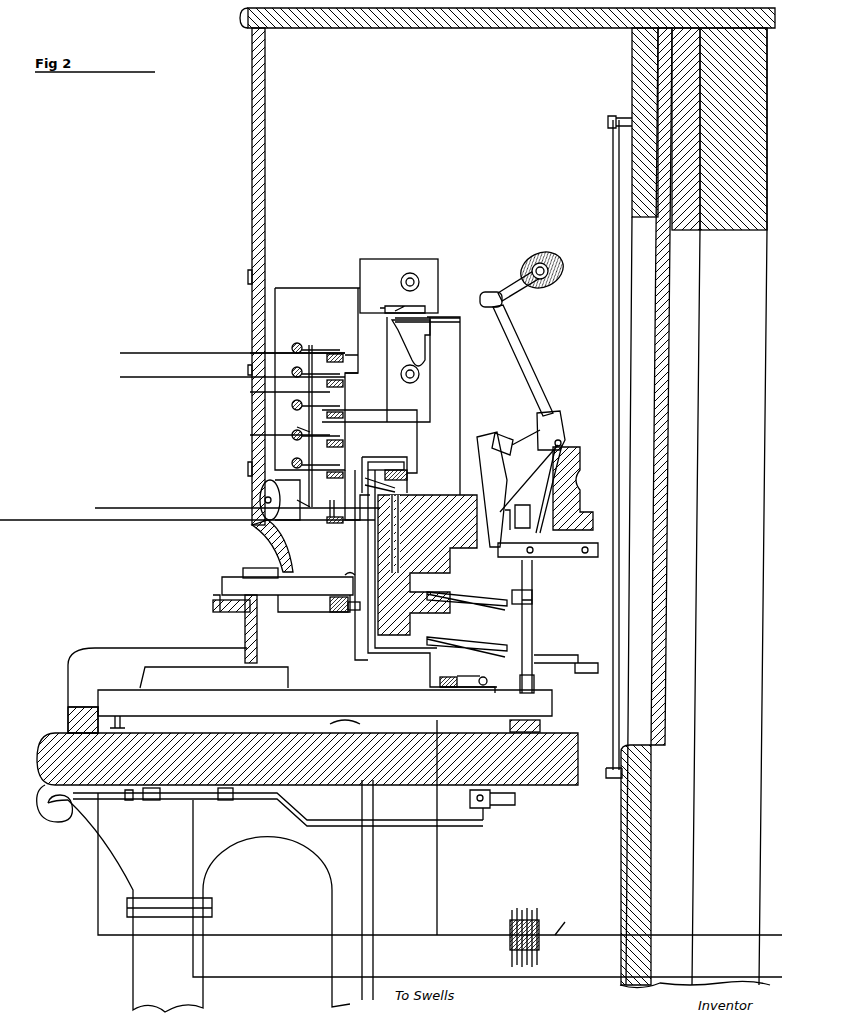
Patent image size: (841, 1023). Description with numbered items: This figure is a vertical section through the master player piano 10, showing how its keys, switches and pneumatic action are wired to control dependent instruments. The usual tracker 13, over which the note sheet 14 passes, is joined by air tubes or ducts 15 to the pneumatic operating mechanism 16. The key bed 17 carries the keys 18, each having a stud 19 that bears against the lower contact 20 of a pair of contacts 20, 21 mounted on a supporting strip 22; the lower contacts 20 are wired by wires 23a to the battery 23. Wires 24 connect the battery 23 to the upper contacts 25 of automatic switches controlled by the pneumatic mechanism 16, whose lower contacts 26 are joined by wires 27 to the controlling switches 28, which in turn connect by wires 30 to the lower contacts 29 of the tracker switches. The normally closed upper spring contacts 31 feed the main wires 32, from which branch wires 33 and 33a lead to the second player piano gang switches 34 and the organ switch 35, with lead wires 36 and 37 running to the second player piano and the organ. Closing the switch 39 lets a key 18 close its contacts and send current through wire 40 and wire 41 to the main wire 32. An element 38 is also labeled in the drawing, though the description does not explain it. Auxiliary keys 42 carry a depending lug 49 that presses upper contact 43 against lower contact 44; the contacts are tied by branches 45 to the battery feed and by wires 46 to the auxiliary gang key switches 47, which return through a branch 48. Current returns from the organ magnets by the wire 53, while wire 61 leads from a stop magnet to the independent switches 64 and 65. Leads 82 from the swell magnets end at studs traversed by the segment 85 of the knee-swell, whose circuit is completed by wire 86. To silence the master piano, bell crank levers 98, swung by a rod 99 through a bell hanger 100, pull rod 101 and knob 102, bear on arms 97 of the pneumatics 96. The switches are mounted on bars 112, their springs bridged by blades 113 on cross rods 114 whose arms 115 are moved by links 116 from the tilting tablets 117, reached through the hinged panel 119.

The master player piano 10 is at (507, 31).
The tracker 13 is at (412, 335).
The note sheet 14 is at (400, 286).
The air tubes or ducts 15 is at (462, 388).
The pneumatic operating mechanism 16 is at (418, 560).
The key bed 17 is at (60, 752).
The keys 18 is at (304, 690).
The stud or projection 19 is at (495, 698).
The lower contact 20 is at (470, 695).
The upper contact 21 is at (476, 669).
The supporting strip 22 is at (455, 676).
The source of energy 23 is at (527, 905).
The wires 23a is at (440, 875).
The wires 24 is at (385, 655).
The upper contacts of automatic switches 25 is at (390, 456).
The lower contacts of automatic switches 26 is at (405, 482).
The wires 27 is at (418, 452).
The controlling switches 28 is at (345, 410).
The lower contacts of tracker switches 29 is at (440, 320).
The wires 30 is at (430, 396).
The upper spring contacts 31 is at (418, 306).
The main wires 32 is at (440, 270).
The branch wire 33 is at (355, 310).
The branch wire 33a is at (360, 350).
The second player piano gang switches 34 is at (332, 352).
The organ switch 35 is at (345, 372).
The lead wires 36 is at (179, 352).
The lead wires 37 is at (192, 376).
The pedal lever assembly 38 is at (460, 490).
The switch 39 is at (345, 436).
The wire 40 is at (372, 645).
The wire 41 is at (298, 450).
The auxiliary keys 42 is at (280, 600).
The upper contact 43 is at (300, 612).
The lower contact 44 is at (333, 612).
The branches 45 is at (355, 612).
The wires 46 is at (350, 567).
The auxiliary gang key switches 47 is at (345, 458).
The branch 48 is at (288, 478).
The depending lug or projection 49 is at (248, 620).
The return wire 53 is at (570, 926).
The wire 61 is at (148, 520).
The independent switch 64 is at (331, 507).
The independent switch 65 is at (345, 522).
The leads or wires 82 is at (196, 860).
The segment 85 is at (200, 795).
The wire 86 is at (98, 890).
The pneumatics 96 is at (475, 605).
The arms 97 is at (533, 612).
The bell crank levers 98 is at (520, 590).
The rod 99 is at (540, 676).
The bell hanger 100 is at (505, 806).
The pull rod 101 is at (275, 798).
The knob 102 is at (135, 800).
The strips or bars 112 is at (312, 416).
The blades 113 is at (322, 352).
The cross rods 114 is at (296, 342).
The outstanding arms 115 is at (290, 352).
The links 116 is at (338, 393).
The tilting tablets 117 is at (205, 500).
The hinged panel 119 is at (250, 316).